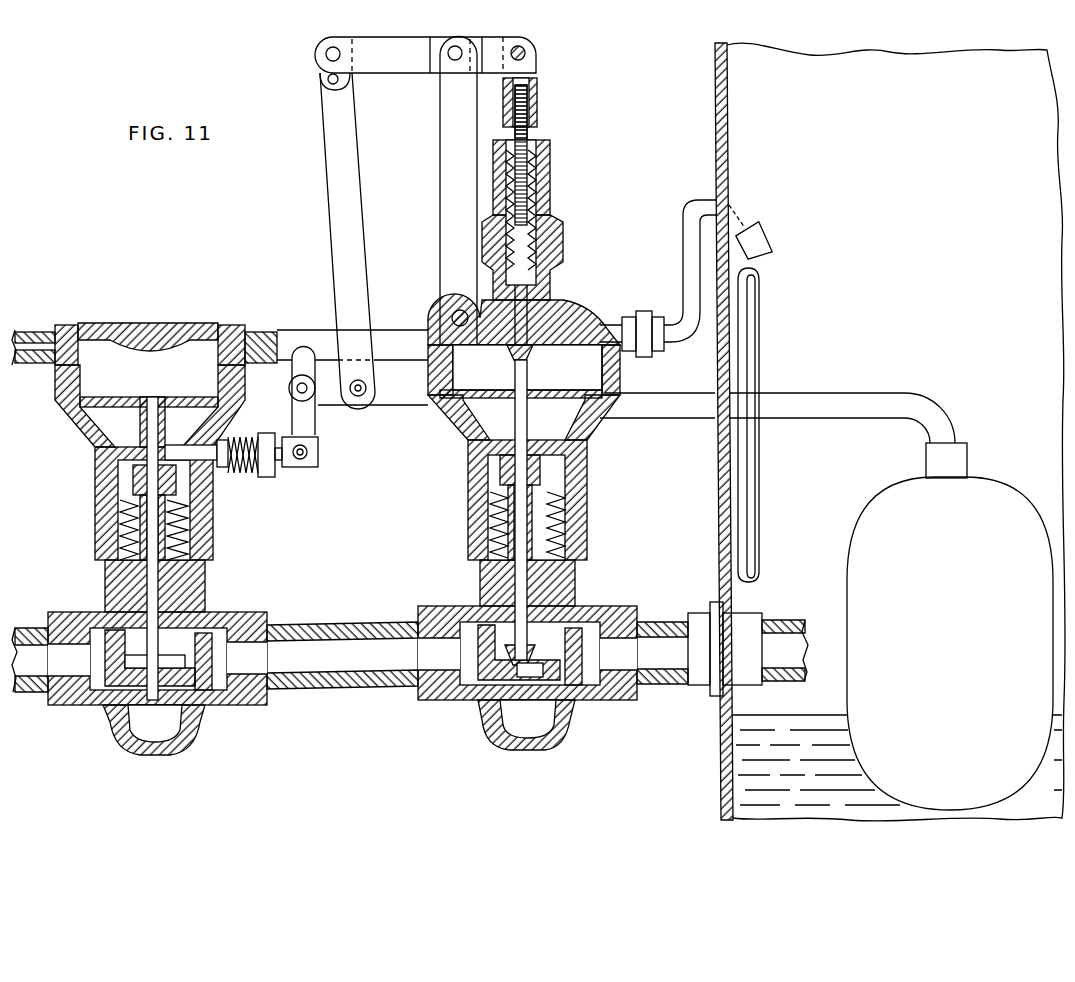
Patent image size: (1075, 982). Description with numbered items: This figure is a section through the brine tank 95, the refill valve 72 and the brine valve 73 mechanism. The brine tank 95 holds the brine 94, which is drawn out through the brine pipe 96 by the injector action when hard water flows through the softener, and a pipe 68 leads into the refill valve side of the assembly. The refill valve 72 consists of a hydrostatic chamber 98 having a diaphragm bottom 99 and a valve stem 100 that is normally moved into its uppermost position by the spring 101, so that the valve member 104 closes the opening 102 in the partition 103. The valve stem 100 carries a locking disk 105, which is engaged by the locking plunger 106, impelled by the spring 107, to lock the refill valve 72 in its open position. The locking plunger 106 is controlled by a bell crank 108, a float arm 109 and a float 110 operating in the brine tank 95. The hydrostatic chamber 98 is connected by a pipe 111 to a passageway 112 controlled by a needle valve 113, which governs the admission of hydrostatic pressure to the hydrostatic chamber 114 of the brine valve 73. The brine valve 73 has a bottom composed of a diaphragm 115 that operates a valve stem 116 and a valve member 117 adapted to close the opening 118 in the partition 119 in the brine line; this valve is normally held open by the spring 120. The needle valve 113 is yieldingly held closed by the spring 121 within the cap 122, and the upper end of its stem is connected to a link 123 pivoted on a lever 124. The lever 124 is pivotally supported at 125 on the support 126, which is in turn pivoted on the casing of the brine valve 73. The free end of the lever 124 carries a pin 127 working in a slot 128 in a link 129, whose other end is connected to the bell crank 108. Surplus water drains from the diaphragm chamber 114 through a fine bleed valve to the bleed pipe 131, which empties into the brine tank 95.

The inlet pipe 68 is at (22, 334).
The refill valve 72 is at (96, 520).
The brine valve 73 is at (586, 505).
The brine 94 is at (740, 760).
The brine tank 95 is at (718, 541).
The brine pipe 96 is at (34, 693).
The hydrostatic chamber 98 is at (105, 360).
The diaphragm bottom 99 is at (182, 397).
The valve stem 100 is at (97, 452).
The spring 101 is at (103, 501).
The opening 102 is at (168, 665).
The partition 103 is at (106, 660).
The valve member 104 is at (128, 742).
The locking disk 105 is at (100, 479).
The locking plunger 106 is at (228, 446).
The spring 107 is at (262, 481).
The bell crank 108 is at (313, 432).
The float arm 109 is at (808, 420).
The float 110 is at (880, 500).
The pipe 111 is at (318, 330).
The passageway 112 is at (535, 337).
The needle valve 113 is at (528, 320).
The hydrostatic chamber 114 is at (575, 358).
The diaphragm 115 is at (613, 380).
The valve stem 116 is at (500, 438).
The valve member 117 is at (548, 660).
The opening 118 is at (532, 678).
The partition 119 is at (480, 652).
The spring 120 is at (586, 479).
The spring 121 is at (549, 163).
The cap 122 is at (551, 181).
The link 123 is at (540, 96).
The lever 124 is at (397, 46).
The pivot 125 is at (455, 46).
The support 126 is at (447, 187).
The pin 127 is at (323, 52).
The slot 128 is at (328, 80).
The link 129 is at (325, 140).
The bleed pipe 131 is at (690, 216).